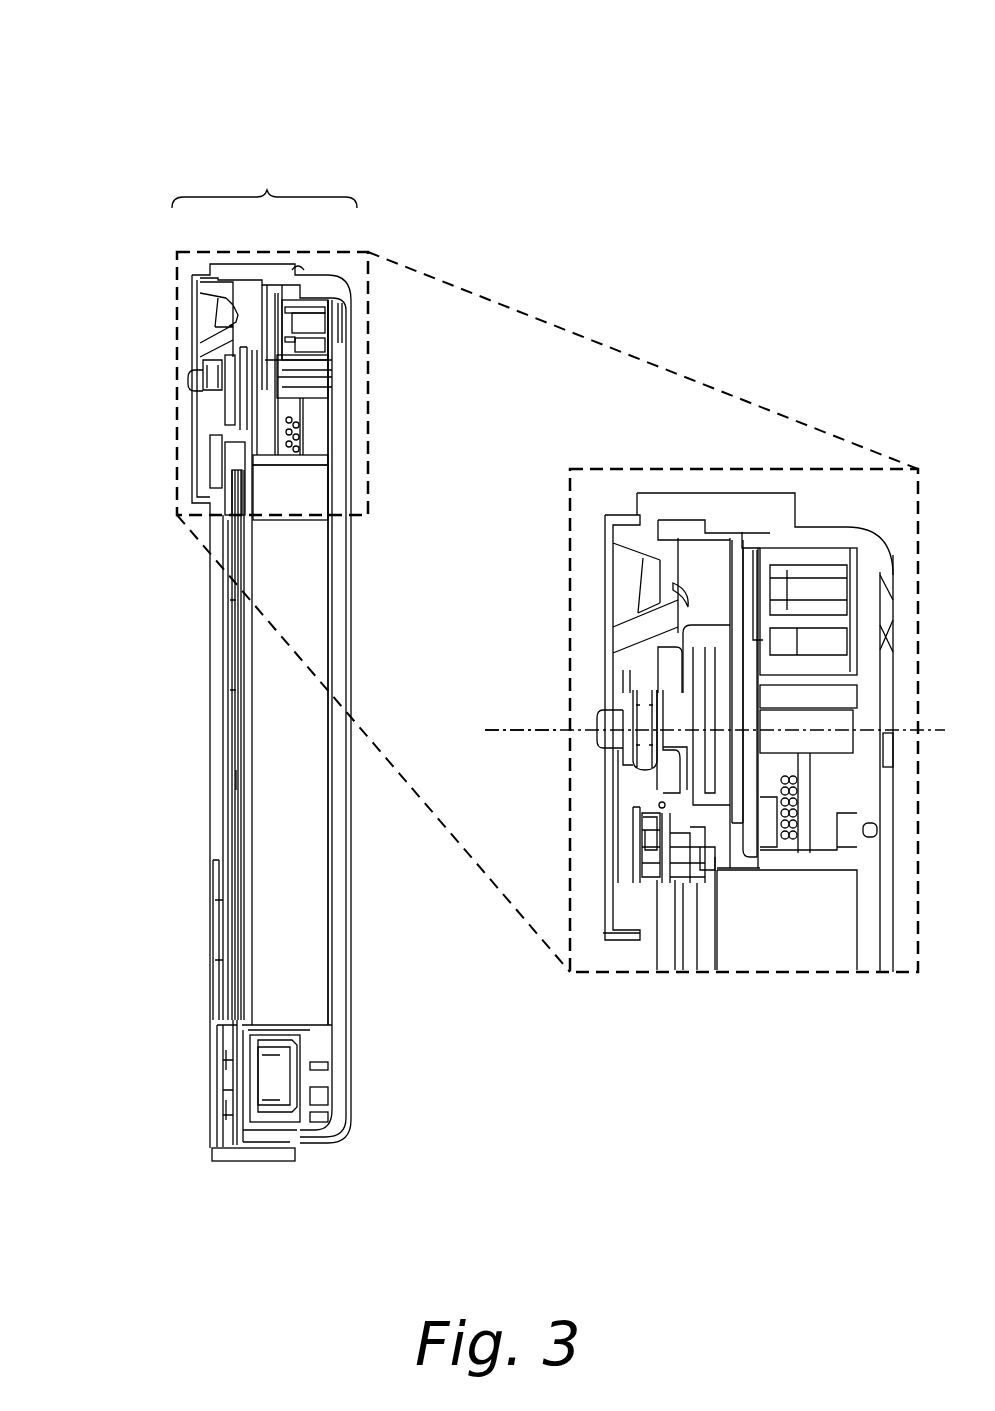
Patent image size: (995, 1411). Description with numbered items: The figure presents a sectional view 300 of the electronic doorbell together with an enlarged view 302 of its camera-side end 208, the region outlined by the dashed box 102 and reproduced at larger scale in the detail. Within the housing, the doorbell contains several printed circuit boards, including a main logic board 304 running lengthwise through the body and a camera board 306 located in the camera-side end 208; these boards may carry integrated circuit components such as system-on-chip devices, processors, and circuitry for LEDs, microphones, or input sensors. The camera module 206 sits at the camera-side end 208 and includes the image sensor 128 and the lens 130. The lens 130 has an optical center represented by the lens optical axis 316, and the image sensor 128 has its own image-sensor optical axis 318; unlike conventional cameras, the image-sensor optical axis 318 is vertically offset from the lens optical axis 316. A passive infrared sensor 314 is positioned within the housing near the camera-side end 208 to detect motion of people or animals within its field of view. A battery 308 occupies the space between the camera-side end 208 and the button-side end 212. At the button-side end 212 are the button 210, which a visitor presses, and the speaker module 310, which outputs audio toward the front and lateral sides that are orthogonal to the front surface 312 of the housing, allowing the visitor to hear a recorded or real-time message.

The sectional view 300 is at (132, 40).
The housing 102 is at (264, 185).
The camera-side end 208 is at (177, 268).
The enlarged view 302 is at (596, 268).
The camera module 206 is at (172, 401).
The main logic board 304 is at (235, 775).
The front surface 312 is at (202, 865).
The battery 308 is at (330, 915).
The button 210 is at (210, 1040).
The speaker module 310 is at (295, 1080).
The button-side end 212 is at (216, 1206).
The passive infrared (PIR) sensor 314 is at (700, 538).
The camera board 306 is at (730, 718).
The image sensor 128 is at (705, 717).
The lens 130 is at (598, 716).
The lens optical axis 316 is at (515, 728).
The image-sensor optical axis 318 is at (538, 732).